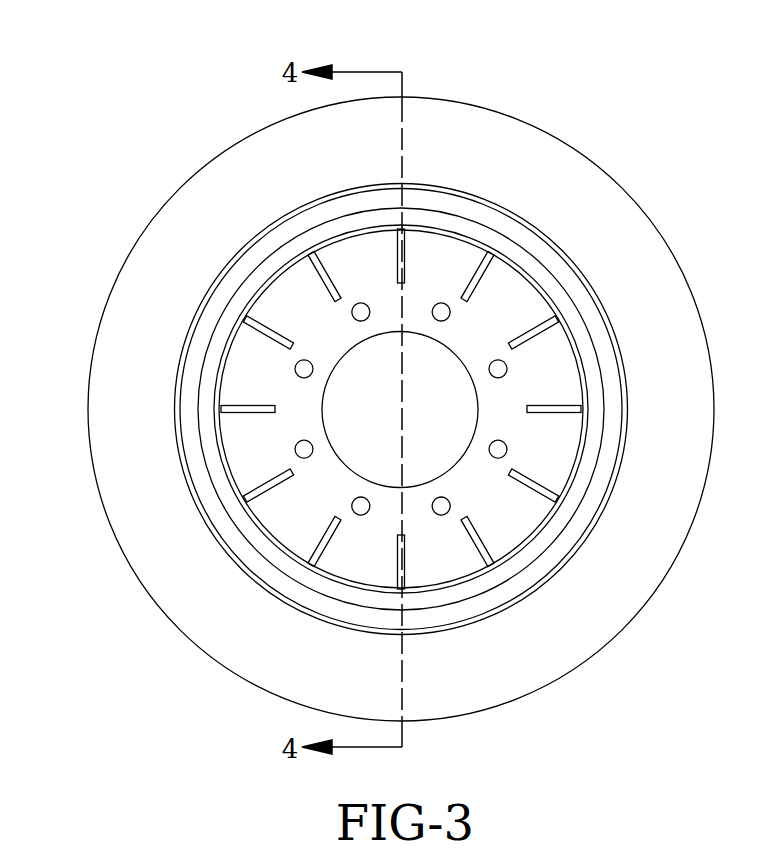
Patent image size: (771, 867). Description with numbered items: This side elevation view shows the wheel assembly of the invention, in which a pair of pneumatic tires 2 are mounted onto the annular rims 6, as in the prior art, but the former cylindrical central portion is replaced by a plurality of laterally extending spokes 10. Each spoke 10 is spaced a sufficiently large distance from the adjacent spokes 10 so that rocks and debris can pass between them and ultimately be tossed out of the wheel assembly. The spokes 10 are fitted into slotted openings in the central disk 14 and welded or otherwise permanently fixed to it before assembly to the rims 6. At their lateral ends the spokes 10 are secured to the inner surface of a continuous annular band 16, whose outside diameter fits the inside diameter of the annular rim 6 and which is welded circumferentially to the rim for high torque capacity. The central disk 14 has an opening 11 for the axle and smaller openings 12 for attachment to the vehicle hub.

The pneumatic tire 2 is at (477, 135).
The annular rim 6 is at (195, 353).
The spoke 10 is at (488, 273).
The opening 11 is at (466, 452).
The smaller openings 12 is at (503, 367).
The central disk 14 is at (277, 298).
The continuous annular band 16 is at (257, 520).